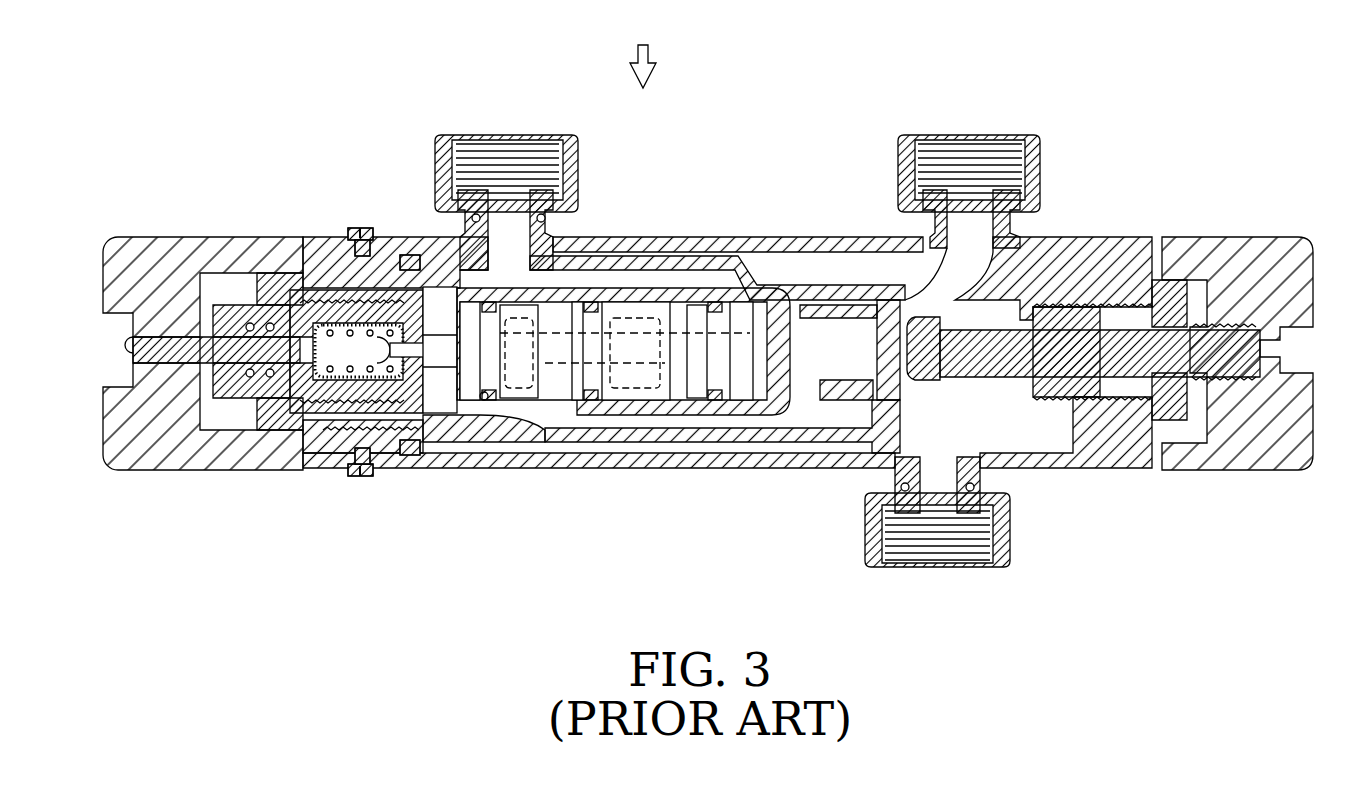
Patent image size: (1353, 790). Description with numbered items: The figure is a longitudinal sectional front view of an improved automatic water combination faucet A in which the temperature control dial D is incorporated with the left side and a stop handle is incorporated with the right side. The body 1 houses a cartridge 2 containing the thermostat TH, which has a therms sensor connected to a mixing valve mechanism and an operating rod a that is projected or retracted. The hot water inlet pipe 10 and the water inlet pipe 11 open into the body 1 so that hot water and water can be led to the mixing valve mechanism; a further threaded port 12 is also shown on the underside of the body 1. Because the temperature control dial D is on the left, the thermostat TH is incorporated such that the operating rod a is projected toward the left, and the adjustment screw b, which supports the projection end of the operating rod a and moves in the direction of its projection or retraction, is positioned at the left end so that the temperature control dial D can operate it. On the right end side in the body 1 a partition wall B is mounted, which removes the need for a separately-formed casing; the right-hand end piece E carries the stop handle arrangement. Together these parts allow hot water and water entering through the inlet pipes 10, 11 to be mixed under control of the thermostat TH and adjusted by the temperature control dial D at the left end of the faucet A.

The body 1 is at (747, 235).
The cartridge 2 is at (548, 432).
The hot water inlet pipe 10 is at (553, 228).
The water inlet pipe 11 is at (1022, 232).
The third port 12 is at (893, 477).
The operating rod a is at (415, 455).
The adjustment screw b is at (330, 430).
The temperature control dial D is at (157, 262).
The end plug E is at (1250, 258).
The thermostat TH is at (485, 400).
The automatic water combination faucet A is at (643, 48).
The partition wall B is at (973, 287).